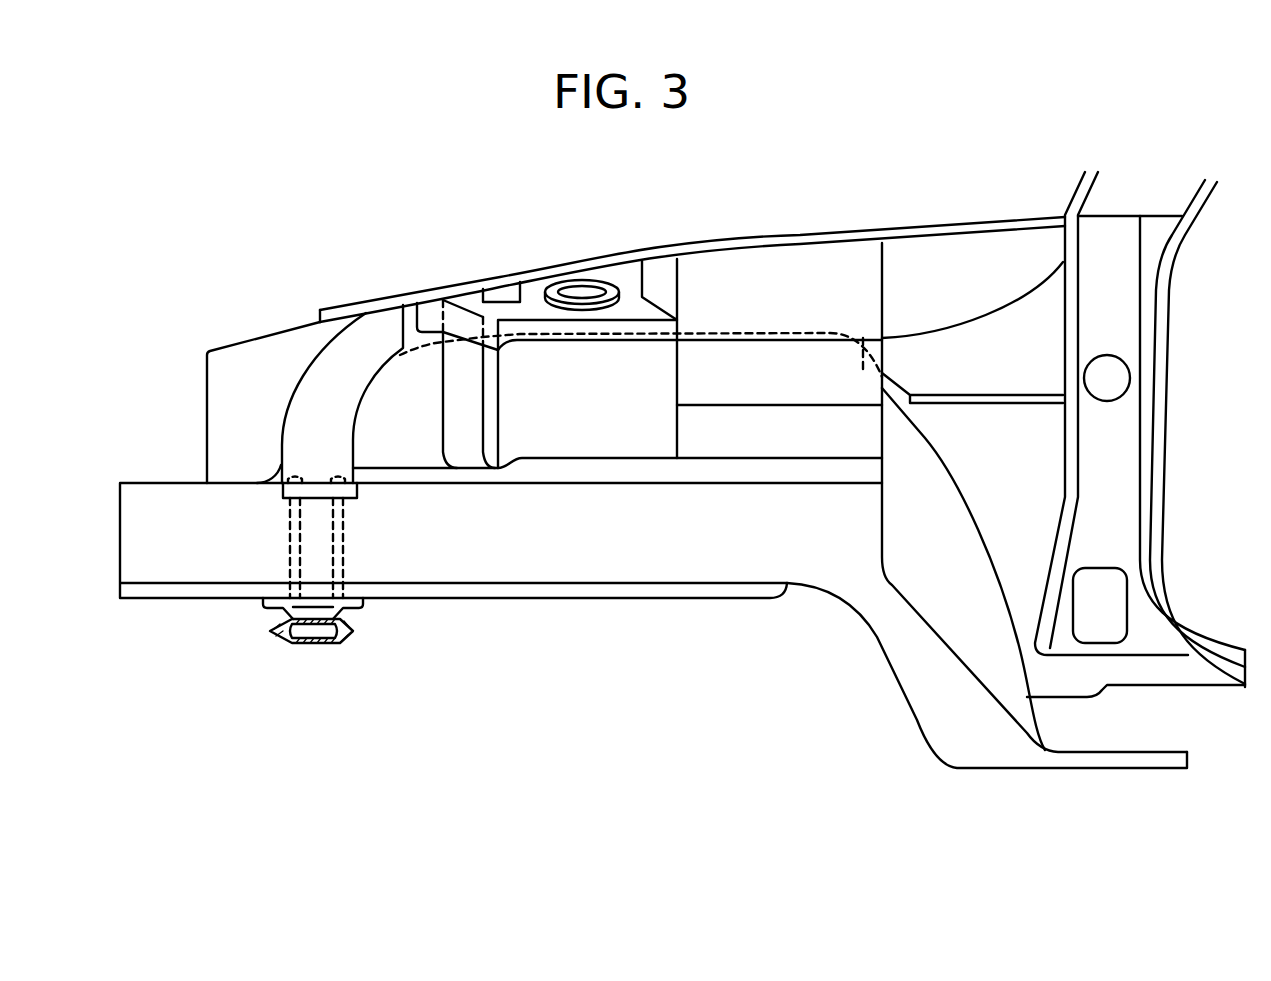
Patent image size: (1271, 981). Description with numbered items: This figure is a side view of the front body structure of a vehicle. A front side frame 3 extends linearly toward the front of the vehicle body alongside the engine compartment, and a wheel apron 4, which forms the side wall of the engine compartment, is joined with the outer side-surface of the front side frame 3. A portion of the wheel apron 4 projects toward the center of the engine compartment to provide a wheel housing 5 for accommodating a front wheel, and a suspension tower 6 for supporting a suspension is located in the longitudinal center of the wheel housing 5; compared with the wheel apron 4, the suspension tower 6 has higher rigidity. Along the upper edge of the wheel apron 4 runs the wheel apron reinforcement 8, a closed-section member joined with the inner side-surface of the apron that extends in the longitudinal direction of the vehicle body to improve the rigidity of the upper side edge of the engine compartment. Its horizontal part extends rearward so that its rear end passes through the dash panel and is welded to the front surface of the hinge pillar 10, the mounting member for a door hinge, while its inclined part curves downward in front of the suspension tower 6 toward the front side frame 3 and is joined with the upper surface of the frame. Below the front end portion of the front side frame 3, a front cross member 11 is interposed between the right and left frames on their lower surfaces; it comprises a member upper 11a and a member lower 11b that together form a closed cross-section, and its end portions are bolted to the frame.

The front side frame 3 is at (158, 475).
The wheel apron 4 is at (777, 290).
The wheel housing 5 is at (413, 393).
The suspension tower 6 is at (685, 297).
The wheel apron reinforcement 8 is at (829, 236).
The hinge pillar 10 is at (1100, 202).
The front cross member 11 is at (320, 604).
The member upper 11a is at (357, 619).
The member lower 11b is at (341, 656).